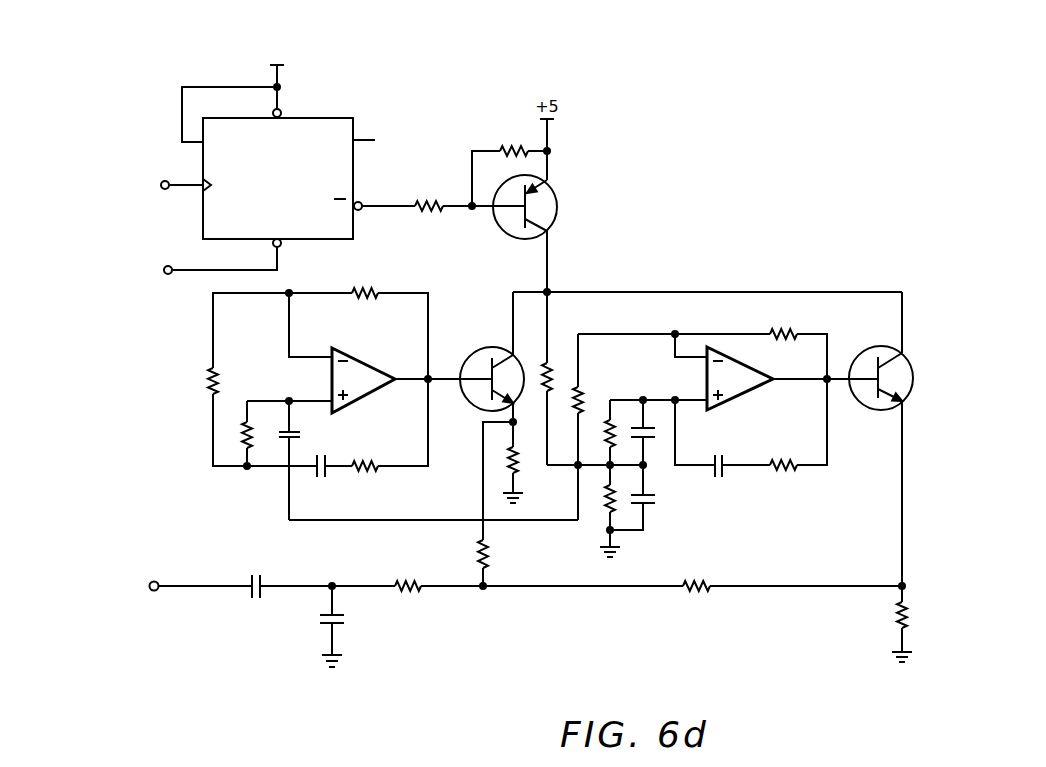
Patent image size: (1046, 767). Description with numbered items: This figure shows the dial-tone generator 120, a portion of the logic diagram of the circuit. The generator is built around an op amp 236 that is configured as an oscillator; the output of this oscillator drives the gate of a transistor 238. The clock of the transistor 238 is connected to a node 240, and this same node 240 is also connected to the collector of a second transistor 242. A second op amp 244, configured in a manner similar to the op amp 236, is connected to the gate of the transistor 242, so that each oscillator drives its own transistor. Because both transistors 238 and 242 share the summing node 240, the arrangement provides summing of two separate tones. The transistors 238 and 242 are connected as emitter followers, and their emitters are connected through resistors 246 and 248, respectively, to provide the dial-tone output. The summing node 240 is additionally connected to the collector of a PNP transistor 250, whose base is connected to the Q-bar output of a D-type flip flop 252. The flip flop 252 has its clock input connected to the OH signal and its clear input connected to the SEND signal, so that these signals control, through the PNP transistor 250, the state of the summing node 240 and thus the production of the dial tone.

The dial-tone generator 120 is at (527, 658).
The op amp 236 is at (364, 401).
The transistor 238 is at (481, 348).
The node 240 is at (547, 292).
The transistor 242 is at (878, 411).
The second op amp 244 is at (740, 400).
The resistor 246 is at (477, 552).
The resistor 248 is at (894, 622).
The PNP transistor 250 is at (557, 207).
The D-type flip flop 252 is at (283, 190).